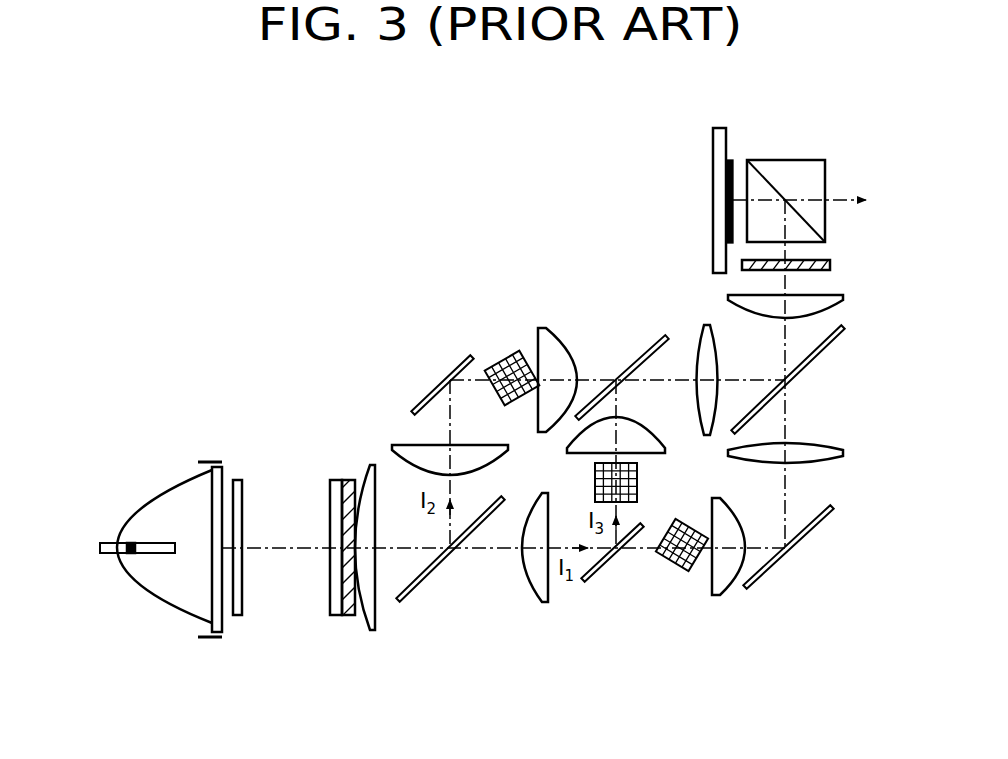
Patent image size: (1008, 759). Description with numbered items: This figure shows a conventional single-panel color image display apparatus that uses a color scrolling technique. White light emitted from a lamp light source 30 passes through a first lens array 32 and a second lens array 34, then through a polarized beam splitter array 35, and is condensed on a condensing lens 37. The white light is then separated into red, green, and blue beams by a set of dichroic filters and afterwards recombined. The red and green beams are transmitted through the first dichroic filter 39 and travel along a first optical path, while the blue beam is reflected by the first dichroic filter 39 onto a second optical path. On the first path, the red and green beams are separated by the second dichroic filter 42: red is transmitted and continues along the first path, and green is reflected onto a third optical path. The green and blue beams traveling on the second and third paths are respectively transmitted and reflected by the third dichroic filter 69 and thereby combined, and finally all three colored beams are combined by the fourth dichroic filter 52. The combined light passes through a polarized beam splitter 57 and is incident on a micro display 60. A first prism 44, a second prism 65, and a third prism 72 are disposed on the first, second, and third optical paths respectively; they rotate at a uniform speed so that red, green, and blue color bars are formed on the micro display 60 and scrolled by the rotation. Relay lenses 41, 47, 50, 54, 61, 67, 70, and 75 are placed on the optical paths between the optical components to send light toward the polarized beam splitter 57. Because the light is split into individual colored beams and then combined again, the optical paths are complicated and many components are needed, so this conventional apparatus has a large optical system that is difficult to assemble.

The lamp light source 30 is at (165, 497).
The first lens array 32 is at (240, 505).
The second lens array 34 is at (334, 616).
The polarized beam splitter array 35 is at (346, 616).
The condensing lens 37 is at (373, 608).
The first dichroic filter 39 is at (432, 575).
The relay lens 41 is at (540, 595).
The second dichroic filter 42 is at (605, 563).
The first prism 44 is at (685, 577).
The relay lens 47 is at (718, 580).
The relay lens 50 is at (835, 462).
The fourth dichroic filter 52 is at (808, 360).
The relay lens 54 is at (842, 295).
The polarized beam splitter 57 is at (785, 160).
The micro display 60 is at (713, 200).
The relay lens 61 is at (400, 447).
The second prism 65 is at (508, 355).
The relay lens 67 is at (545, 338).
The third dichroic filter 69 is at (635, 360).
The relay lens 70 is at (705, 327).
The third prism 72 is at (595, 480).
The relay lens 75 is at (652, 448).